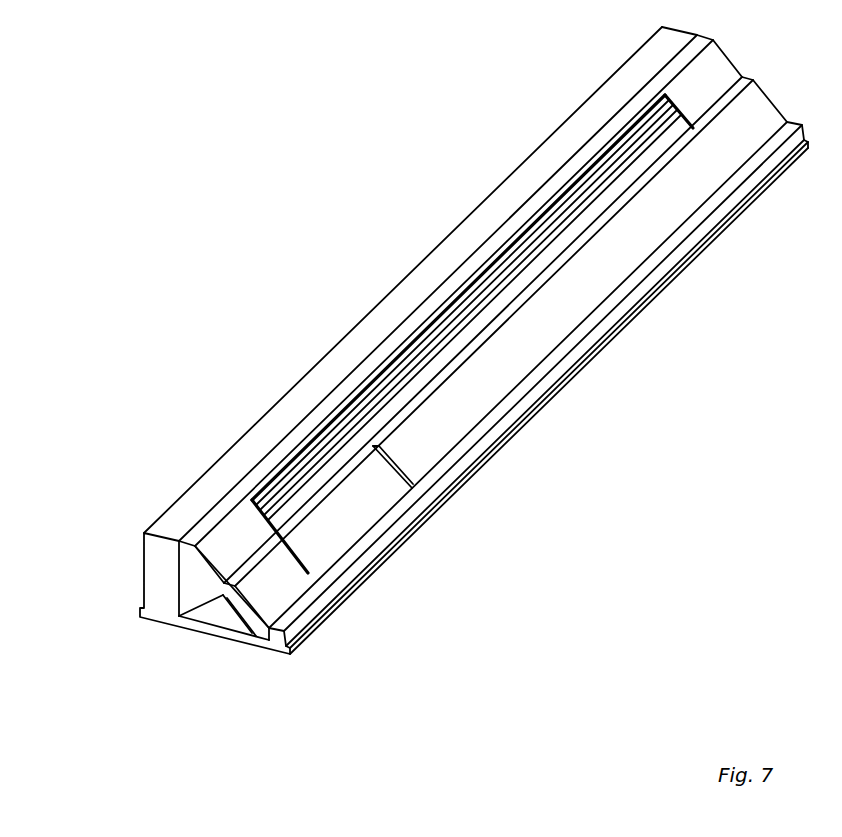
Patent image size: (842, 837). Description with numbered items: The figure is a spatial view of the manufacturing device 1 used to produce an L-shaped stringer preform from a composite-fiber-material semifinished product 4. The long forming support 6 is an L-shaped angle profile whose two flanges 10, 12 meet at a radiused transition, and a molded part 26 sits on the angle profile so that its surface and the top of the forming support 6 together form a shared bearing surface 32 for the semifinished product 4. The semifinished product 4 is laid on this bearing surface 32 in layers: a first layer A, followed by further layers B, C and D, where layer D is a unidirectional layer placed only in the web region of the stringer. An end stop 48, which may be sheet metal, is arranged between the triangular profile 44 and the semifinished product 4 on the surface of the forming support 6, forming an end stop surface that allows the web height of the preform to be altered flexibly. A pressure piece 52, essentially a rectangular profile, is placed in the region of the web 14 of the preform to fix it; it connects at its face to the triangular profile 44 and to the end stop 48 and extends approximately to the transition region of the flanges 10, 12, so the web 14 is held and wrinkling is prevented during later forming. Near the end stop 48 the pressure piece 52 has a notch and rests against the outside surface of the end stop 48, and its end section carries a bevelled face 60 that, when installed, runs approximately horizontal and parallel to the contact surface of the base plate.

The manufacturing device 1 is at (385, 226).
The composite-fiber-material semifinished product 4 is at (244, 481).
The forming support 6 is at (255, 598).
The flange 10 is at (192, 607).
The flange 12 is at (250, 612).
The web 14 is at (262, 549).
The molded part 26 is at (192, 578).
The bearing surface 32 is at (284, 575).
The triangular profile 44 is at (265, 642).
The end stop 48 is at (198, 553).
The pressure piece 52 is at (441, 420).
The bevelled face 60 is at (476, 343).
The first layer A is at (302, 457).
The further layer B is at (321, 445).
The further layer C is at (375, 415).
The unidirectional layer D is at (327, 522).